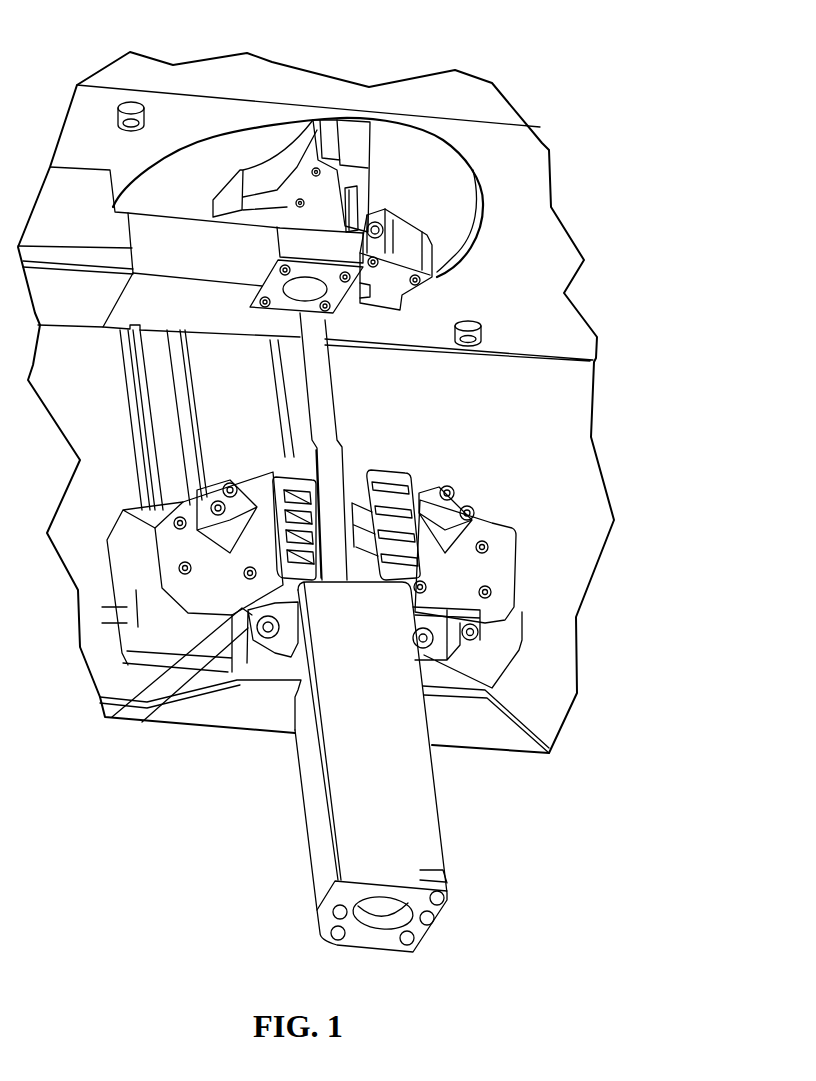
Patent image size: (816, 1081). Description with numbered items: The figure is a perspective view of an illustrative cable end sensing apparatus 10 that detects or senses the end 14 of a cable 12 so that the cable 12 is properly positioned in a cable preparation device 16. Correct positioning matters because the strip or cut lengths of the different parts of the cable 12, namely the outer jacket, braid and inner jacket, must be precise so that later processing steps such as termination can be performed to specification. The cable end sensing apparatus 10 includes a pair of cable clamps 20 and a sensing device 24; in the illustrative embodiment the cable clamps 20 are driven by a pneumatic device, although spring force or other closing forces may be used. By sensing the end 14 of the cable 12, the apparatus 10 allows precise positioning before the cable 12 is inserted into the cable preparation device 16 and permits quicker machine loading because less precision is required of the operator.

The cable end sensing apparatus 10 is at (600, 175).
The cable 12 is at (332, 467).
The end 14 is at (437, 278).
The cable preparation device 16 is at (368, 177).
The cable clamps 20 is at (193, 240).
The sensing device 24 is at (291, 216).